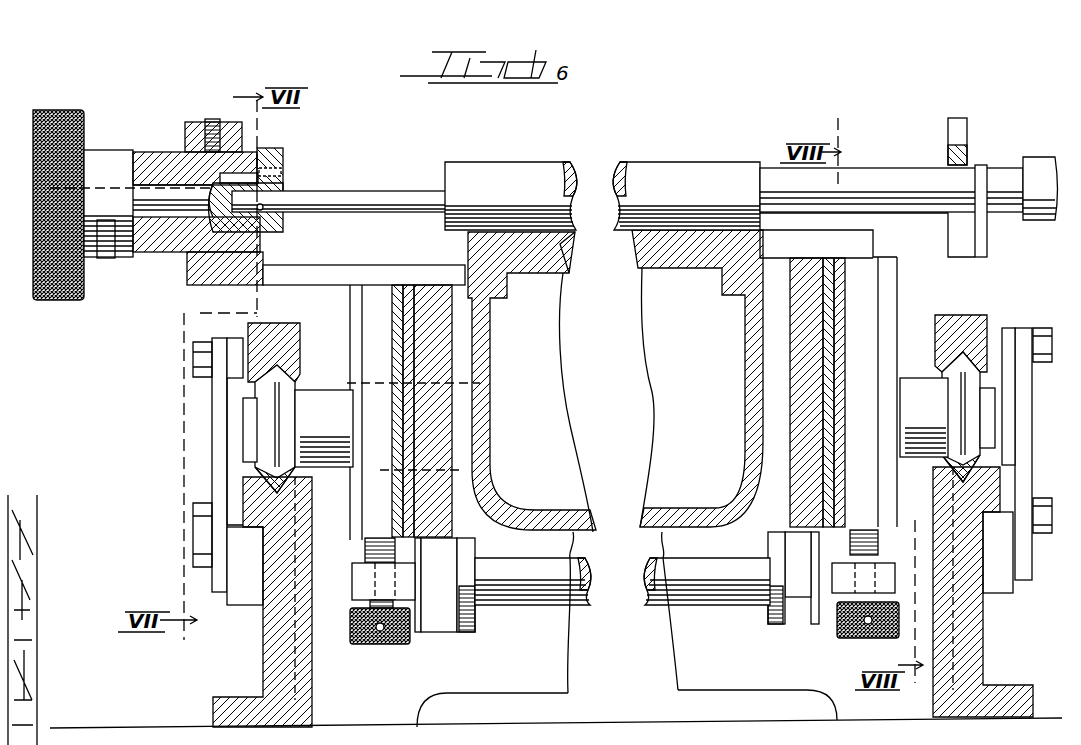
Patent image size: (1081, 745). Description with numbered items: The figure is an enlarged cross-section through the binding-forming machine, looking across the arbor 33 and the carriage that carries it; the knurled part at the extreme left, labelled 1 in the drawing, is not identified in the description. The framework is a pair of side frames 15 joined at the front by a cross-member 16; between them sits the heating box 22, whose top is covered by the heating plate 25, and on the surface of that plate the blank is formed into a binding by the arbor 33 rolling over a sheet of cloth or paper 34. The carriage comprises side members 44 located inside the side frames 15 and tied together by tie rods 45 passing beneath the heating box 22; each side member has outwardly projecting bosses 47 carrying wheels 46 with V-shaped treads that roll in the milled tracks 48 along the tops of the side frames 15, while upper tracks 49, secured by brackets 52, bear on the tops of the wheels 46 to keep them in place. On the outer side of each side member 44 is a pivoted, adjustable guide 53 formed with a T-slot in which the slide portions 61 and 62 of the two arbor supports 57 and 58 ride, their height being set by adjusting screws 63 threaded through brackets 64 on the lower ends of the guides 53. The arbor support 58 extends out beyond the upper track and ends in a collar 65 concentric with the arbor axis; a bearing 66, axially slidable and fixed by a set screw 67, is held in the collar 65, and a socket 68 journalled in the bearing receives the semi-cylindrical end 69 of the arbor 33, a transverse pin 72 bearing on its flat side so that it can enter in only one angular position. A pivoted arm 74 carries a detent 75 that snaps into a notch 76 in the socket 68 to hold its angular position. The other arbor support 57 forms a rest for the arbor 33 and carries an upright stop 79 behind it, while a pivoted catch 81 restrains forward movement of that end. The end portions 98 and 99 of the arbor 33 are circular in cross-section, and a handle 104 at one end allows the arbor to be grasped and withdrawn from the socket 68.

The knurled adjusting knob 1 is at (42, 200).
The side frames 15 is at (265, 655).
The cross-member 16 is at (548, 672).
The heating box 22 is at (585, 525).
The heating plate 25 is at (567, 272).
The arbor 33 is at (505, 185).
The cloth or paper 34 is at (570, 244).
The carriage side members 44 is at (432, 286).
The tie rods 45 is at (580, 598).
The wheels 46 is at (288, 396).
The bosses 47 is at (322, 458).
The tracks 48 is at (243, 472).
The upper tracks 49 is at (292, 340).
The brackets 52 is at (218, 460).
The guides 53 is at (397, 284).
The arbor support 57 is at (960, 248).
The arbor support 58 is at (322, 272).
The slide portion 61 is at (878, 528).
The slide portion 62 is at (353, 508).
The adjusting screws 63 is at (398, 632).
The brackets 64 is at (362, 592).
The collar 65 is at (195, 132).
The bearing 66 is at (175, 168).
The set screw 67 is at (214, 128).
The socket 68 is at (265, 232).
The end of arbor 69 is at (265, 196).
The transverse pin 72 is at (283, 212).
The arm 74 is at (285, 160).
The detent 75 is at (283, 178).
The notch 76 is at (240, 178).
The upright stop 79 is at (981, 170).
The catch 81 is at (948, 150).
The end portion of arbor 98 is at (390, 192).
The end portion of arbor 99 is at (874, 180).
The handle 104 is at (1043, 170).